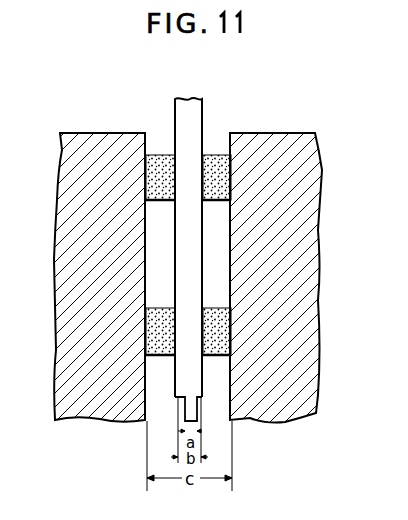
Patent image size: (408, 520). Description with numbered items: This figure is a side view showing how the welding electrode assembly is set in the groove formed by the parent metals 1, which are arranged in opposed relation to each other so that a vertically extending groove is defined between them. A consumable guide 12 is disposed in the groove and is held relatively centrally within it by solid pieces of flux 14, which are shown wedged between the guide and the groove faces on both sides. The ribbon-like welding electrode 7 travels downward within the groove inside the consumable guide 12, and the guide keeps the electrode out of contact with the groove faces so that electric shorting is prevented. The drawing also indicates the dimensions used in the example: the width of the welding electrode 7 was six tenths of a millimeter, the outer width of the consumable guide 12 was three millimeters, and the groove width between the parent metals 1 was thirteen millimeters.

The parent metals 1 is at (318, 227).
The consumable guide 12 is at (172, 112).
The solid pieces of flux 14 is at (215, 155).
The ribbon-like welding electrode 7 is at (203, 413).